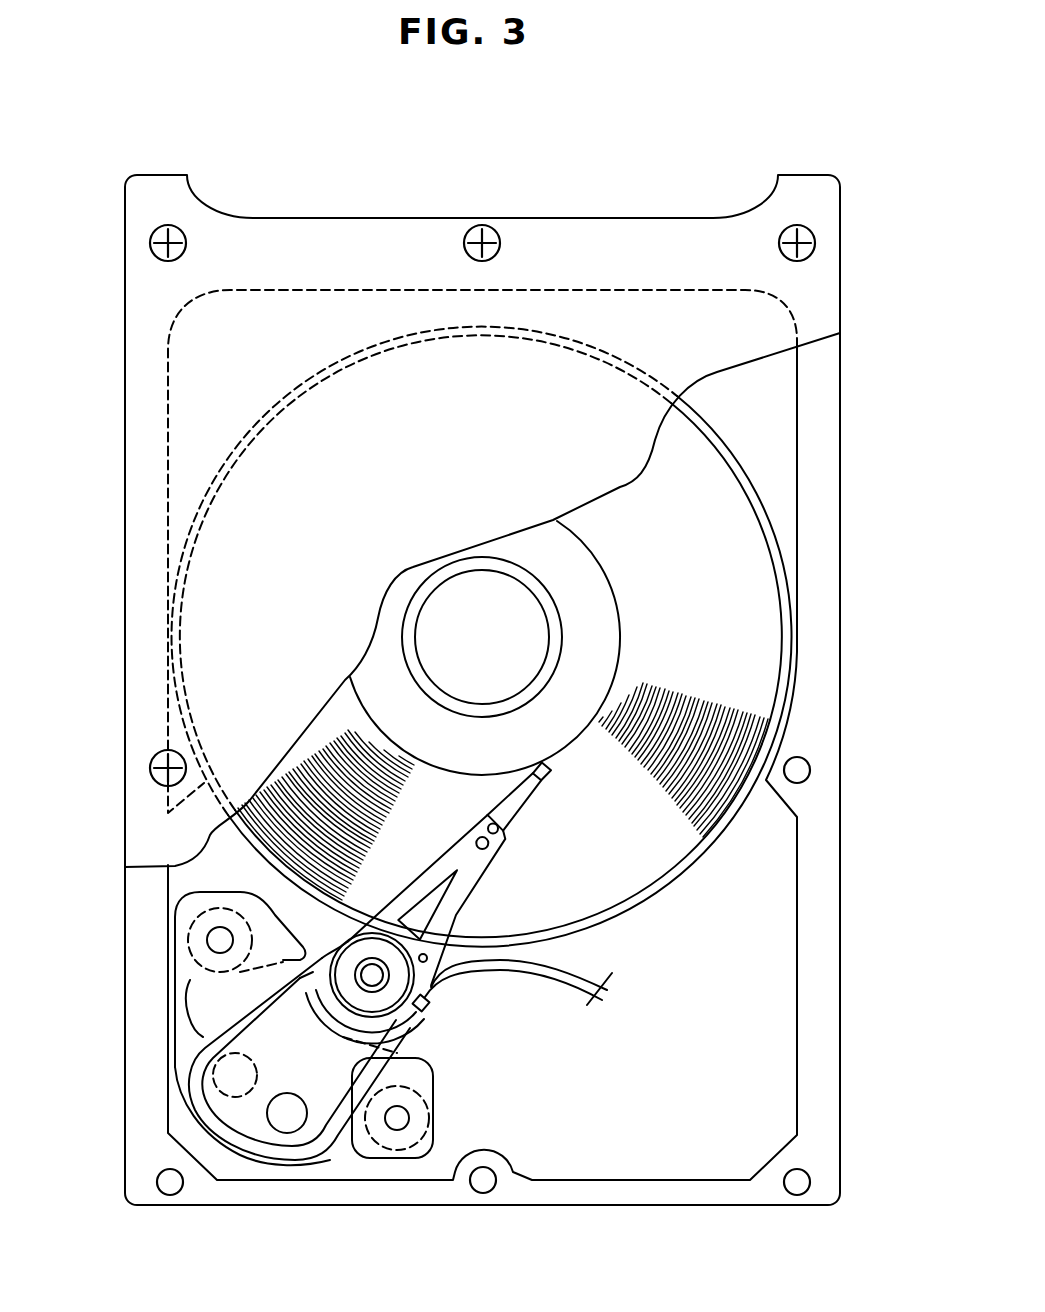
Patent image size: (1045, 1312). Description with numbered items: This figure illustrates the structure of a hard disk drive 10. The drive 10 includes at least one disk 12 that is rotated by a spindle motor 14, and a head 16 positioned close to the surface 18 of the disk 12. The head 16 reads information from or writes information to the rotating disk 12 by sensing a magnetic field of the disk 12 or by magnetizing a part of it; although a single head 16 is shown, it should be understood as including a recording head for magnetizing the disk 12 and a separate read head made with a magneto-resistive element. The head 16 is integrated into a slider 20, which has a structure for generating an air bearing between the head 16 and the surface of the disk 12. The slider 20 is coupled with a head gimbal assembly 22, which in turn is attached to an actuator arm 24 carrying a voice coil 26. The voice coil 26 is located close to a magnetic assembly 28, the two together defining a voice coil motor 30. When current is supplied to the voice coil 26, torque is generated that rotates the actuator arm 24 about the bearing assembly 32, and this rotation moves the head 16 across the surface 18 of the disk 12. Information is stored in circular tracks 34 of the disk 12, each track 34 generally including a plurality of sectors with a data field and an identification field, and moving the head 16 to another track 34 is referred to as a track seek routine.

The hard disk drive 10 is at (665, 153).
The disk 12 is at (747, 570).
The spindle motor 14 is at (458, 613).
The head 16 is at (547, 776).
The surface 18 is at (703, 658).
The slider 20 is at (522, 800).
The head gimbal assembly 22 is at (470, 912).
The actuator arm 24 is at (288, 968).
The voice coil 26 is at (197, 1063).
The magnetic assembly 28 is at (220, 1008).
The voice coil motor 30 is at (342, 1127).
The bearing assembly 32 is at (387, 990).
The circular tracks 34 is at (337, 760).